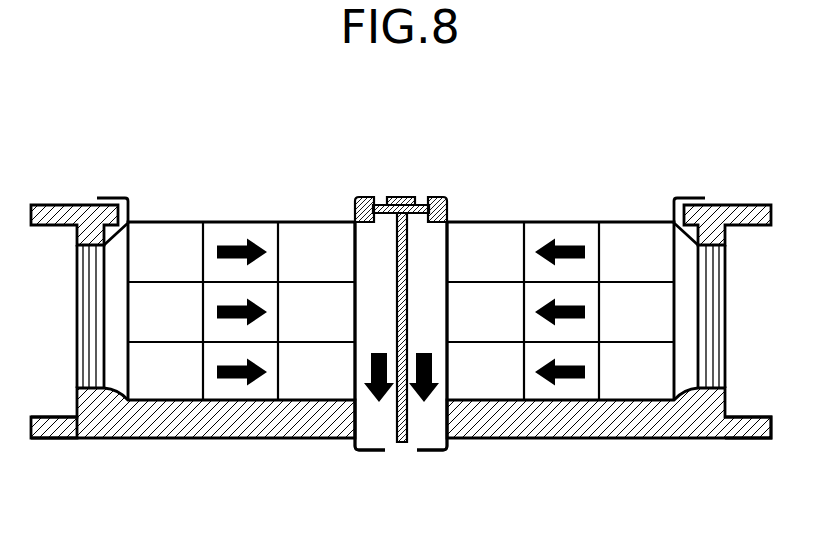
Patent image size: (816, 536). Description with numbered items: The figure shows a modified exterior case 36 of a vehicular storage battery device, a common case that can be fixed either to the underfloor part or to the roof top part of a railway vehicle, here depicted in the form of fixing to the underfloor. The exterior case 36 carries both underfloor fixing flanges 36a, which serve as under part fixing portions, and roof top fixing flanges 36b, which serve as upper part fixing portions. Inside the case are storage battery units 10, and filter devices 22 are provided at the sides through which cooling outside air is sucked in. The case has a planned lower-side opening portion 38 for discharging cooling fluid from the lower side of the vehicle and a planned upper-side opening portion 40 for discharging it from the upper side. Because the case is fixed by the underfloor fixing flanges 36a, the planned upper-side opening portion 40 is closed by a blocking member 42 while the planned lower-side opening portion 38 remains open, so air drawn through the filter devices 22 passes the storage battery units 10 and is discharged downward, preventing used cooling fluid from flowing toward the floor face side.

The storage battery unit 10 is at (178, 303).
The filter device 22 is at (77, 315).
The exterior case 36 is at (282, 416).
The underfloor fixing flange 36a is at (40, 210).
The roof top fixing flange 36b is at (40, 428).
The planned lower-side opening portion 38 is at (387, 443).
The planned upper-side opening portion 40 is at (382, 212).
The blocking member 42 is at (415, 215).